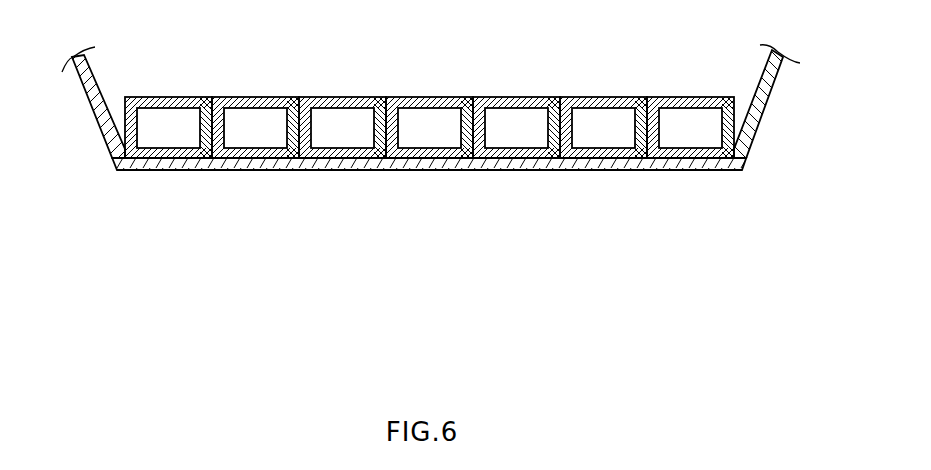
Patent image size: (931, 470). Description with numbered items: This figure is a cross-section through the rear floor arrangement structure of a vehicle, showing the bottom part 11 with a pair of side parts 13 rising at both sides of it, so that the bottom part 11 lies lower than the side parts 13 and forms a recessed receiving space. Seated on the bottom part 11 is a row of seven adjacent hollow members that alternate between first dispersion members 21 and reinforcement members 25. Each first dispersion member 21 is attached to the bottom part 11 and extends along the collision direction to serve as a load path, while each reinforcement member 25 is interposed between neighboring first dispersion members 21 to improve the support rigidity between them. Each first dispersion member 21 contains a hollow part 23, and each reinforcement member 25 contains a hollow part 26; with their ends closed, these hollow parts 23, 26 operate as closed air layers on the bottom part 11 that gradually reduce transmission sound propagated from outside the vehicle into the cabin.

The bottom part 11 is at (472, 165).
The side part 13 is at (100, 115).
The first dispersion member 21 is at (252, 102).
The hollow part 23 is at (254, 140).
The reinforcement member 25 is at (165, 100).
The hollow part 26 is at (168, 140).